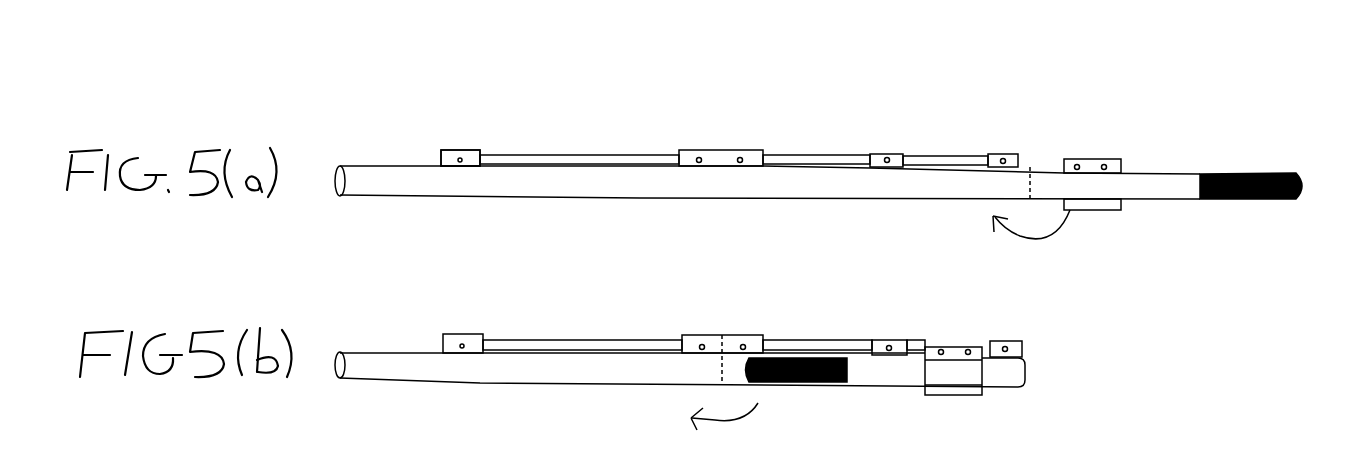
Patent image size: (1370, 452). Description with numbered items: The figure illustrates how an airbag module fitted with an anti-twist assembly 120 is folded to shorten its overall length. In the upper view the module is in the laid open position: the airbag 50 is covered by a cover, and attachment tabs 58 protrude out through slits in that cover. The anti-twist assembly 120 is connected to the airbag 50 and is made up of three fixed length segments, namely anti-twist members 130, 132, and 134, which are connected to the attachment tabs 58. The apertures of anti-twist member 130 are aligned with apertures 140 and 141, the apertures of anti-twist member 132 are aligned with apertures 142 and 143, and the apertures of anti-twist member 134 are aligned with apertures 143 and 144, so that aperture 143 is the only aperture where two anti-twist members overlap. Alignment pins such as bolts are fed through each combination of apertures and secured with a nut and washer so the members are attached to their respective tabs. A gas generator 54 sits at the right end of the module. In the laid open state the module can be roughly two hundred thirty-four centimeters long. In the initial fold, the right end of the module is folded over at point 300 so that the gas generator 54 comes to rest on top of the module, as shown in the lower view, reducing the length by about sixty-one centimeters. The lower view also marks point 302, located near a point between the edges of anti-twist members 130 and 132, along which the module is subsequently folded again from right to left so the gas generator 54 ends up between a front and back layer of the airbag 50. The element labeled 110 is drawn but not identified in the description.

In FIG. 5A, the airbag 50 is at (348, 185).
In FIG. 5A, the gas generator 54 is at (1253, 173).
In FIG. 5B, the gas generator 54 is at (800, 382).
In FIG. 5A, the attachment tabs 58 is at (453, 147).
In FIG. 5A, the slide block 110 is at (1121, 159).
In FIG. 5B, the slide block 110 is at (957, 352).
In FIG. 5A, the anti-twist assembly 120 is at (760, 85).
In FIG. 5A, the anti-twist member 130 is at (537, 160).
In FIG. 5B, the anti-twist member 130 is at (568, 345).
In FIG. 5A, the anti-twist member 132 is at (825, 155).
In FIG. 5B, the anti-twist member 132 is at (823, 343).
In FIG. 5A, the anti-twist member 134 is at (943, 157).
In FIG. 5A, the aperture 140 is at (462, 159).
In FIG. 5A, the aperture 141 is at (700, 159).
In FIG. 5A, the aperture 142 is at (741, 160).
In FIG. 5A, the aperture 143 is at (888, 155).
In FIG. 5A, the aperture 144 is at (1004, 158).
In FIG. 5A, the fold point 300 is at (1032, 165).
In FIG. 5B, the fold point 302 is at (722, 332).